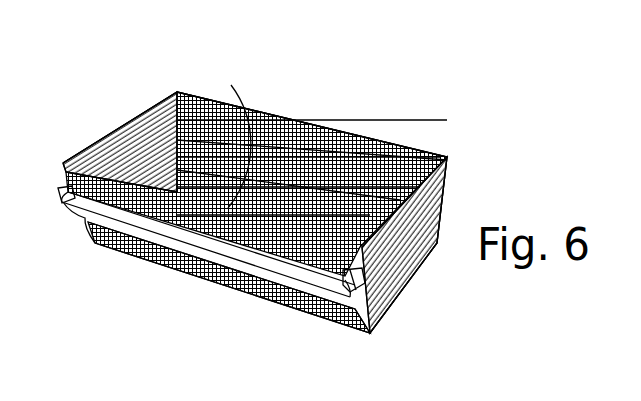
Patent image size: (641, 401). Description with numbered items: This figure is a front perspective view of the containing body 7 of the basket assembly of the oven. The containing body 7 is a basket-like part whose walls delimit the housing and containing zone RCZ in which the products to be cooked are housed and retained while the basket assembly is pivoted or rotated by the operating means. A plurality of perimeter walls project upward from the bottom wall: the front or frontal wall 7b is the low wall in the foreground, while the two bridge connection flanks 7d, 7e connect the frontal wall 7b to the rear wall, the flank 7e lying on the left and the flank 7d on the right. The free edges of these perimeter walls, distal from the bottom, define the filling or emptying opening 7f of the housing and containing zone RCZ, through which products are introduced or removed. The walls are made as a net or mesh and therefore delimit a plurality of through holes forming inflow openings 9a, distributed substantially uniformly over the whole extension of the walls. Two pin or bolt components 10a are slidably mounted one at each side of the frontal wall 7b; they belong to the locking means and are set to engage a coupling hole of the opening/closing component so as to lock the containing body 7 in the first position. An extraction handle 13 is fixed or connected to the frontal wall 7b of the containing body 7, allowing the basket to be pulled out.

The containing body 7 is at (397, 303).
The front or frontal wall 7b is at (263, 290).
The bridge connection flank 7d is at (420, 243).
The bridge connection flank 7e is at (110, 134).
The filling or emptying opening 7f is at (298, 111).
The inflow openings (through holes) 9a is at (357, 173).
The pin or bolt 10a is at (60, 192).
The extraction handle 13 is at (190, 242).
The housing and containing zone RCZ is at (231, 85).